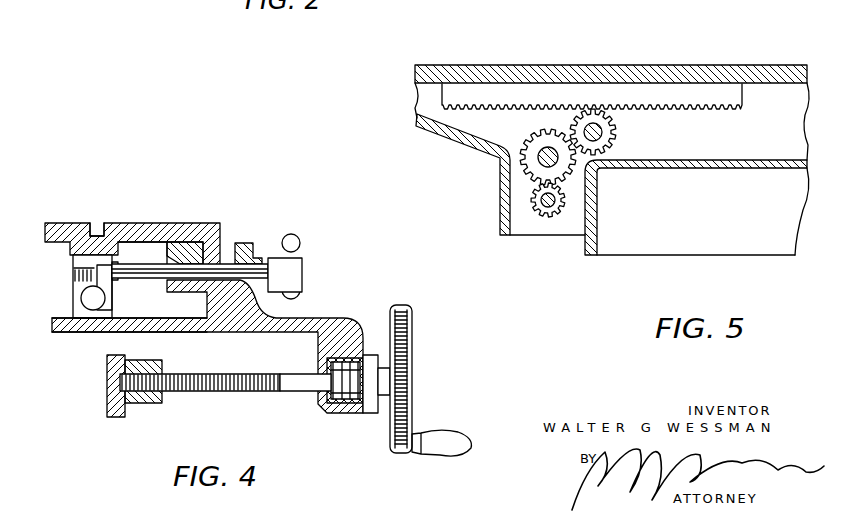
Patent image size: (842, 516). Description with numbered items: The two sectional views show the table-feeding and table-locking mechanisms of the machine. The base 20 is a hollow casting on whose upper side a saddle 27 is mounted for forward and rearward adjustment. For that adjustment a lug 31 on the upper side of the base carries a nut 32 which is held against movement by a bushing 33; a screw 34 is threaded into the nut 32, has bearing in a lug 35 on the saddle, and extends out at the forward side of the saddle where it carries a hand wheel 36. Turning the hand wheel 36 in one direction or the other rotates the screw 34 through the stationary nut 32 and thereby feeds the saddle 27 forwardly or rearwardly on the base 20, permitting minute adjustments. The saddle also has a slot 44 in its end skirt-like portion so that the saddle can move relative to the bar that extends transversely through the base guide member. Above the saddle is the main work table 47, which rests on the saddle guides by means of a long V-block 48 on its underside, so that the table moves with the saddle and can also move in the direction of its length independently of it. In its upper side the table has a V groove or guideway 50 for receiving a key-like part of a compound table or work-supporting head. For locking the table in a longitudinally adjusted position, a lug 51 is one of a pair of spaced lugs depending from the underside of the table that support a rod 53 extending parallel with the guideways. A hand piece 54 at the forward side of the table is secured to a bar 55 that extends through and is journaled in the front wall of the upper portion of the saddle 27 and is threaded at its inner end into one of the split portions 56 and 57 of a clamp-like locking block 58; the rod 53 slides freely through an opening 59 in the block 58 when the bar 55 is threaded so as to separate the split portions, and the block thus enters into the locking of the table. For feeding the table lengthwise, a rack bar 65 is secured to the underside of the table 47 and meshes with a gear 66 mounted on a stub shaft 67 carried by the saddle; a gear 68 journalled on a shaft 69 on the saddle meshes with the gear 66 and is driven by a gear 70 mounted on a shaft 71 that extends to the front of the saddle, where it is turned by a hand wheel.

In FIG. 4, the main work table 47 is at (66, 209).
In FIG. 5, the main work table 47 is at (659, 61).
In FIG. 4, the V groove or guideway 50 is at (102, 223).
In FIG. 4, the slot 44 is at (163, 223).
In FIG. 4, the long V-block 48 is at (203, 223).
In FIG. 4, the bar 55 is at (230, 264).
In FIG. 4, the hand piece 54 is at (296, 240).
In FIG. 4, the lug 51 is at (74, 264).
In FIG. 4, the split portion 56 is at (80, 262).
In FIG. 4, the split portion 57 is at (120, 266).
In FIG. 4, the rod 53 is at (82, 299).
In FIG. 4, the clamp-like locking means or block 58 is at (112, 300).
In FIG. 4, the opening 59 is at (80, 325).
In FIG. 4, the saddle 27 is at (359, 292).
In FIG. 5, the saddle 27 is at (486, 181).
In FIG. 4, the lug 31 is at (107, 362).
In FIG. 4, the bushing 33 is at (146, 362).
In FIG. 4, the nut 32 is at (170, 374).
In FIG. 4, the bar or screw 34 is at (297, 384).
In FIG. 4, the lug 35 is at (338, 410).
In FIG. 4, the hand wheel 36 is at (414, 392).
In FIG. 5, the rack bar 65 is at (683, 92).
In FIG. 5, the gear 66 is at (610, 148).
In FIG. 5, the stub shaft 67 is at (602, 130).
In FIG. 5, the gear 68 is at (543, 142).
In FIG. 5, the shaft 69 is at (556, 164).
In FIG. 5, the gear 70 is at (561, 214).
In FIG. 5, the shaft 71 is at (545, 210).
In FIG. 5, the base 20 is at (620, 252).